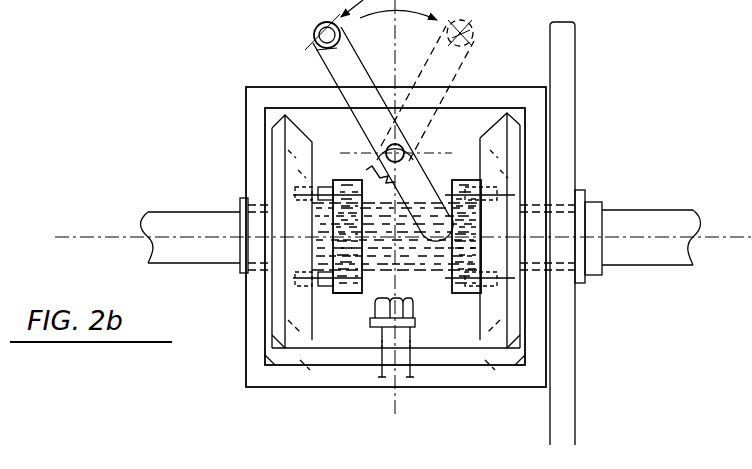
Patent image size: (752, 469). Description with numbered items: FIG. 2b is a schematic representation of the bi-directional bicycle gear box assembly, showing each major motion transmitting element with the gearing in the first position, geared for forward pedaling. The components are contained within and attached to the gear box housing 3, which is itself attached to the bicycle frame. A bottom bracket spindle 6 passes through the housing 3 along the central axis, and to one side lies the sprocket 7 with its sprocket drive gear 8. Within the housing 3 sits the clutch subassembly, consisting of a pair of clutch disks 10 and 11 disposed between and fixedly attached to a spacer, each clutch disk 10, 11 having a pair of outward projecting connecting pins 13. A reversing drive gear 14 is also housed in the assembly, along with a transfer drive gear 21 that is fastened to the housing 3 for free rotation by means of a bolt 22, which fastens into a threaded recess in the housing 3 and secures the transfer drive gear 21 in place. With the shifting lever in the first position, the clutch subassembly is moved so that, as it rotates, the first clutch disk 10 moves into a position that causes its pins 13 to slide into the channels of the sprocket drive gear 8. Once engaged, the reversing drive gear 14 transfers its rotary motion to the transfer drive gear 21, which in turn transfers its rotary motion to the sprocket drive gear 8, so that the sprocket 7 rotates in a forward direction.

The gear box housing 3 is at (530, 80).
The sprocket drive gear 8 is at (523, 170).
The sprocket 7 is at (577, 153).
The bottom bracket spindle 6 is at (217, 210).
The reversing drive gear 14 is at (270, 173).
The first clutch disk 10 is at (460, 297).
The connecting pins 13 is at (325, 290).
The second clutch disk 11 is at (343, 300).
The transfer drive gear 21 is at (297, 370).
The bolt 22 is at (377, 333).